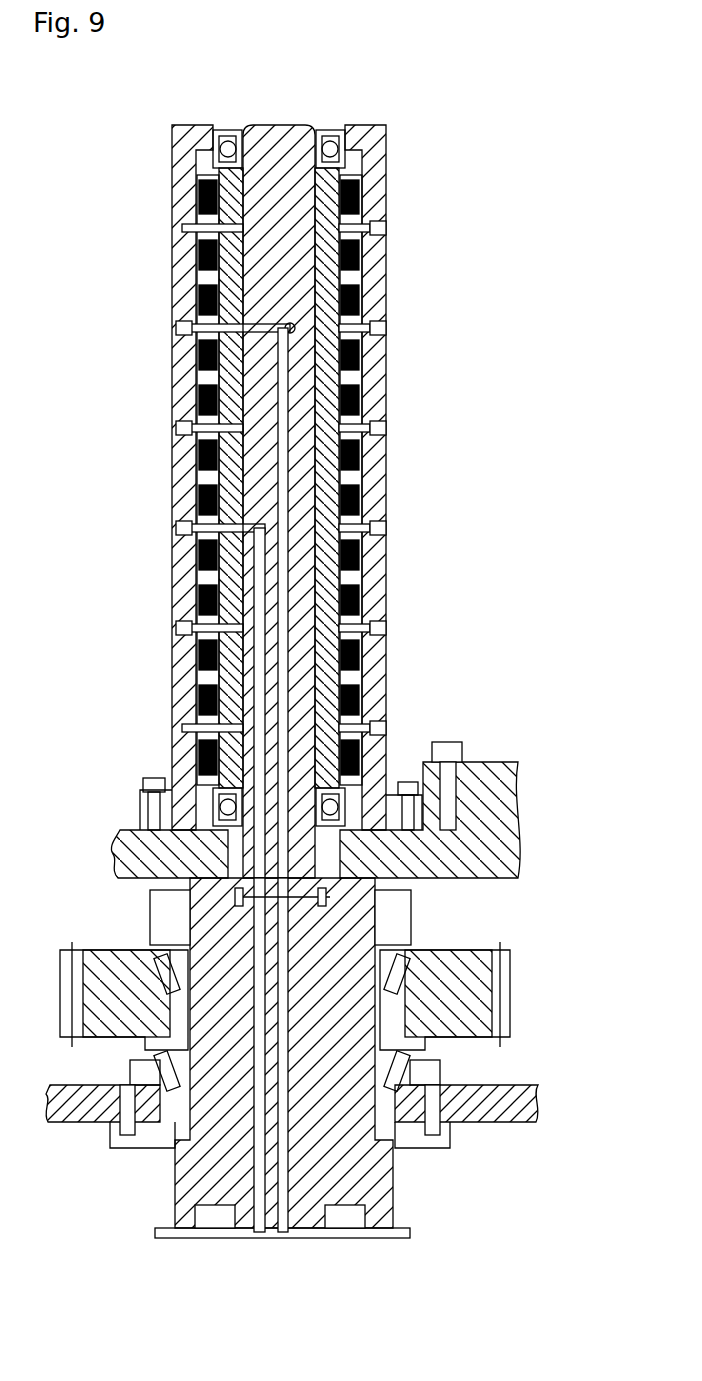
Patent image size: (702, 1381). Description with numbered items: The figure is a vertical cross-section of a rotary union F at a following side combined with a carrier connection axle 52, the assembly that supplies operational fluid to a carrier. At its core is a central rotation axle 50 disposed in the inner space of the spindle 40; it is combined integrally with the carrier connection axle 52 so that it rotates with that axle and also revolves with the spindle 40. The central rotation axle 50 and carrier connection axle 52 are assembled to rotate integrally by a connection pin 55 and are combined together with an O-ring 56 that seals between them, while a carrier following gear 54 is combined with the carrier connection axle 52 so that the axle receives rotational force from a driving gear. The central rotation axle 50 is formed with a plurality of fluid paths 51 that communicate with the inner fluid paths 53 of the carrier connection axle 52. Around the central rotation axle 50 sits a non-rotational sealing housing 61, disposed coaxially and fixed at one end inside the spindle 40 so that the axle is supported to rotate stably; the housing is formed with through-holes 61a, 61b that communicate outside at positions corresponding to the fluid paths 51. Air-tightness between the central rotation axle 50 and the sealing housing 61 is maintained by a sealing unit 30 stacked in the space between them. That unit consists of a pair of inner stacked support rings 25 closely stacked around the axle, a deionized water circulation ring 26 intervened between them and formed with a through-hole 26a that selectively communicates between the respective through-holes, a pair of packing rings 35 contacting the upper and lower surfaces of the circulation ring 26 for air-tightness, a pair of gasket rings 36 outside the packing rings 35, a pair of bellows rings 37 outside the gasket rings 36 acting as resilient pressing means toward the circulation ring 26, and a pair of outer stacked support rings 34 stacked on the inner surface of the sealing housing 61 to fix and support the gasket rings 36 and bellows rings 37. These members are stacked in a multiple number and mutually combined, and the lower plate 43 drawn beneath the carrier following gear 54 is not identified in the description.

The central rotation axle 50 is at (283, 195).
The sealing housing 61 is at (287, 378).
The through-hole 61a is at (386, 326).
The through-hole 61b is at (178, 325).
The inner stacked support ring 25 is at (288, 480).
The fluid path 51 is at (200, 370).
The bellows ring 37 is at (365, 455).
The outer stacked support ring 34 is at (383, 483).
The gasket ring 36 is at (383, 505).
The packing ring 35 is at (383, 538).
The rotary union at following side F is at (407, 601).
The through-hole 26a is at (386, 630).
The deionized water circulation ring 26 is at (322, 675).
The sealing unit 30 is at (386, 690).
The spindle 40 is at (520, 838).
The O-ring 56 is at (372, 898).
The connection pin 55 is at (415, 940).
The carrier following gear 54 is at (460, 1012).
The base plate 43 is at (510, 1105).
The inner fluid path 53 is at (253, 1235).
The carrier connection axle 52 is at (312, 1232).